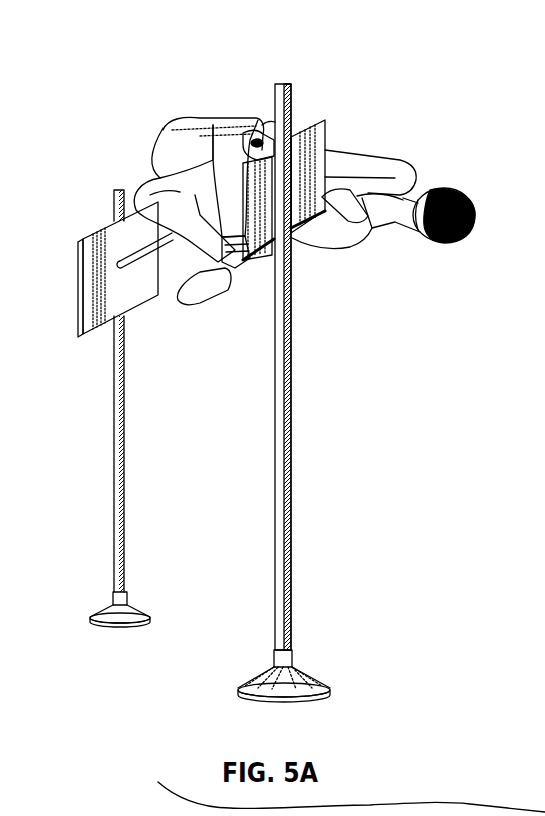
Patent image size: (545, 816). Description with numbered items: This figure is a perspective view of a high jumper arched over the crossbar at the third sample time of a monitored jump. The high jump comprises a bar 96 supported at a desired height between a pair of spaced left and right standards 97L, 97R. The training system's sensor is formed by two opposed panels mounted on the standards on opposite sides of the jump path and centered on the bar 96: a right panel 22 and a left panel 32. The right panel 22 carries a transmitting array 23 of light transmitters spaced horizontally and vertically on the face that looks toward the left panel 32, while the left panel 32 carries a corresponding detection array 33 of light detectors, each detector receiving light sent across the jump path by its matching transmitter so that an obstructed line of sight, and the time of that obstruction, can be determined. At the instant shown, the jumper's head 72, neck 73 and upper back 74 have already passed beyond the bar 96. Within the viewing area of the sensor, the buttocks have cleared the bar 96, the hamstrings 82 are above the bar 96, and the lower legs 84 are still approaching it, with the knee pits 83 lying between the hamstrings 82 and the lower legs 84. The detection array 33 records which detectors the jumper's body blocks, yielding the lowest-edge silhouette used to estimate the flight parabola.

The right panel 22 is at (328, 148).
The transmitting array 23 is at (318, 118).
The left panel 32 is at (78, 246).
The detection array 33 is at (90, 285).
The head 72 is at (462, 240).
The neck 73 is at (400, 228).
The upper back 74 is at (355, 238).
The hamstrings 82 is at (252, 114).
The knee pits 83 is at (184, 119).
The lower legs 84 is at (233, 280).
The bar 96 is at (143, 272).
The left standard 97L is at (120, 463).
The right standard 97R is at (283, 499).